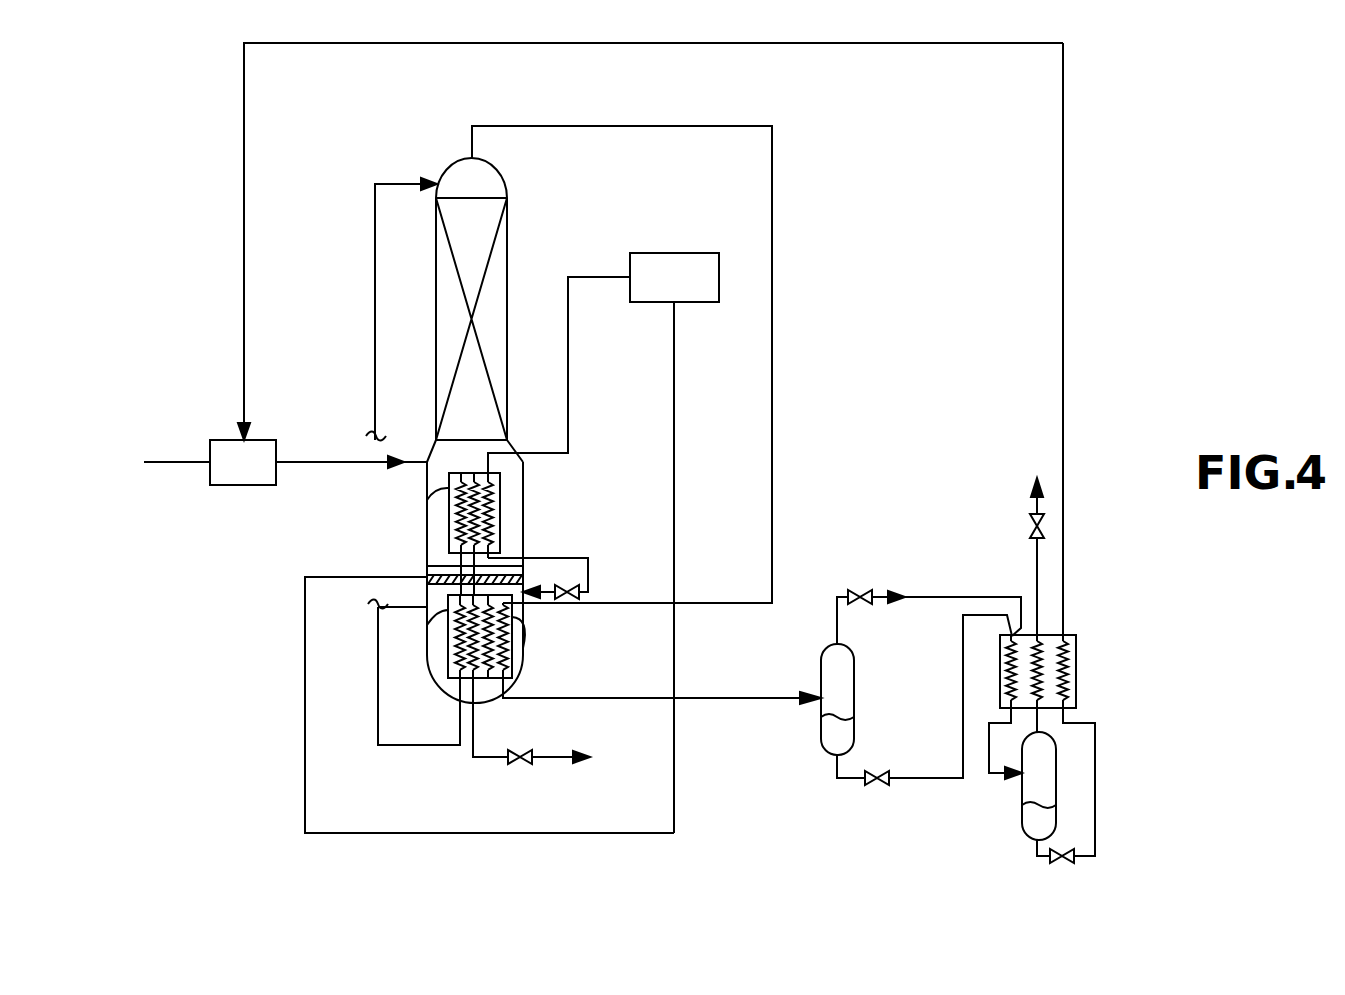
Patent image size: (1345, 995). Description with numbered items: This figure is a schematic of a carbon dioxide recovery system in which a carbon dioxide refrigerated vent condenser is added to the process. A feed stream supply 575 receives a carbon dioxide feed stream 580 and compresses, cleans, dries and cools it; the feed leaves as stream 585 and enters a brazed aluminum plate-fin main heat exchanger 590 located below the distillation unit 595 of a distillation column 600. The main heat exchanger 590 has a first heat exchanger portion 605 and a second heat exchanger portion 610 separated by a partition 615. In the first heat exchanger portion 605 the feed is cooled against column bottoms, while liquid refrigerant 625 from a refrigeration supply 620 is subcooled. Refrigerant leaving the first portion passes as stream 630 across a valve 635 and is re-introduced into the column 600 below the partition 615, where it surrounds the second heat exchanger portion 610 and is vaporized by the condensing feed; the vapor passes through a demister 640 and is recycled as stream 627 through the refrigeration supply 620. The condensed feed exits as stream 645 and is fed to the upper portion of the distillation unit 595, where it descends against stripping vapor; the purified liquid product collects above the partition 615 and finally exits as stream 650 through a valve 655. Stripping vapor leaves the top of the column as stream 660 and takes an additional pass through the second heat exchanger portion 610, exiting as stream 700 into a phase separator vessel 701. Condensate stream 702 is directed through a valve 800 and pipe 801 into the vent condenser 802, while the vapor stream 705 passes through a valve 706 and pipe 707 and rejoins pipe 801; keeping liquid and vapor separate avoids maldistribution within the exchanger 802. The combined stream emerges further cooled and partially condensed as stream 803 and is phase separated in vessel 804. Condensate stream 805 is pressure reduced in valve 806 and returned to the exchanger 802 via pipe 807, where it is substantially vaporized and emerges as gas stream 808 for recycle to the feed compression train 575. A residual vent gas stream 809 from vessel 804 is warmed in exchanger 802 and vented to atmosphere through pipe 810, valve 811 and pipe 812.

The feed stream supply 575 is at (260, 475).
The carbon dioxide feed stream 580 is at (177, 464).
The feed stream 585 is at (360, 464).
The main heat exchanger 590 is at (523, 535).
The distillation unit 595 is at (490, 430).
The distillation column 600 is at (508, 357).
The first heat exchanger portion 605 is at (449, 530).
The second heat exchanger portion 610 is at (448, 655).
The partition 615 is at (426, 618).
The refrigeration supply 620 is at (693, 288).
The liquid refrigerant 625 is at (568, 428).
The refrigerant vapor recycle stream 627 is at (305, 772).
The refrigerant stream 630 is at (588, 575).
The valve 635 is at (565, 600).
The demister 640 is at (523, 620).
The liquefied feed stream 645 is at (378, 695).
The carbon dioxide product stream 650 is at (478, 722).
The valve 655 is at (520, 765).
The stripping vapor stream 660 is at (630, 126).
The cooled overhead stream 700 is at (612, 700).
The phase separator vessel 701 is at (821, 725).
The condensate stream 702 is at (836, 790).
The vapor stream 705 is at (836, 623).
The valve 706 is at (862, 590).
The vapor pipe 707 is at (882, 598).
The valve 800 is at (878, 787).
The condensate pipe 801 is at (945, 780).
The vent condenser 802 is at (1077, 667).
The combined cooled stream 803 is at (993, 776).
The phase separator vessel 804 is at (1022, 817).
The condensate stream 805 is at (1038, 860).
The valve 806 is at (1058, 862).
The condensate return pipe 807 is at (1095, 805).
The gas stream 808 is at (1063, 570).
The residual vent gas stream 809 is at (1040, 723).
The vent pipe 810 is at (1037, 572).
The vent valve 811 is at (1037, 518).
The vent outlet pipe 812 is at (1030, 482).